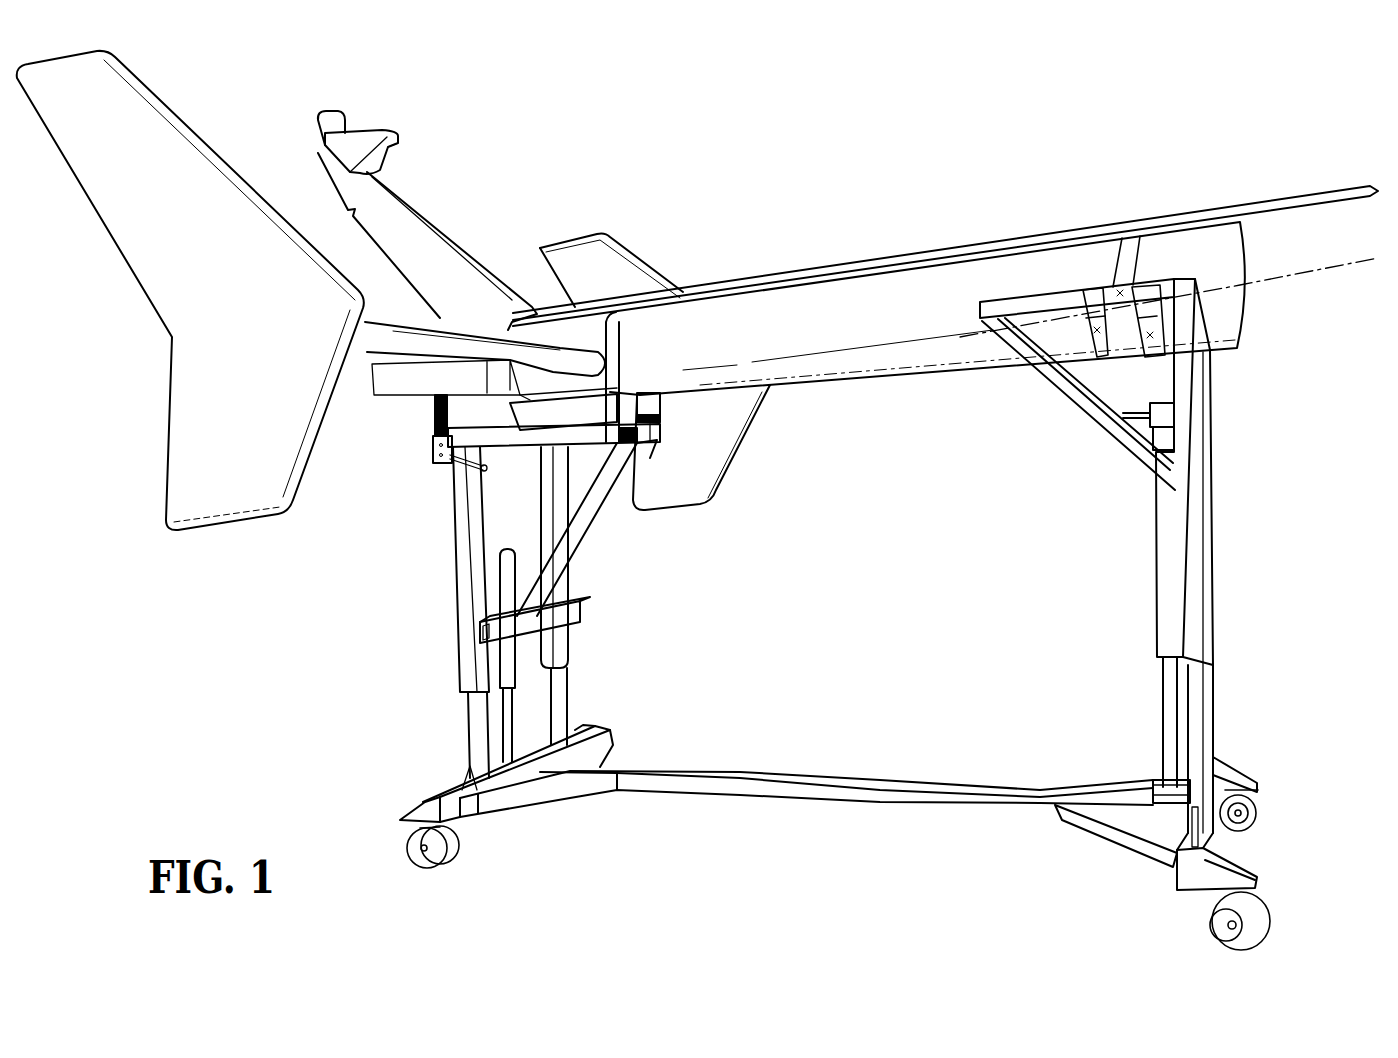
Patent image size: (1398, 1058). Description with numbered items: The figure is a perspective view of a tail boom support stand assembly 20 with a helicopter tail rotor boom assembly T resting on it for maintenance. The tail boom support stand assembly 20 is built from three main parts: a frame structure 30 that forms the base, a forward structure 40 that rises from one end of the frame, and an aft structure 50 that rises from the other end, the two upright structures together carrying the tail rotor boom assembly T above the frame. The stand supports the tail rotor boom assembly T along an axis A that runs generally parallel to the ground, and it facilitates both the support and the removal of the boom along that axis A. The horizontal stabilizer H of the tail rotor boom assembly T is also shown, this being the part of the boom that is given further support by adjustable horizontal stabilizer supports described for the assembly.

The horizontal stabilizer H is at (390, 320).
The tail rotor boom assembly T is at (828, 298).
The axis A is at (1345, 265).
The tail boom support stand assembly 20 is at (895, 614).
The frame structure 30 is at (805, 815).
The forward structure 40 is at (1130, 702).
The aft structure 50 is at (612, 632).